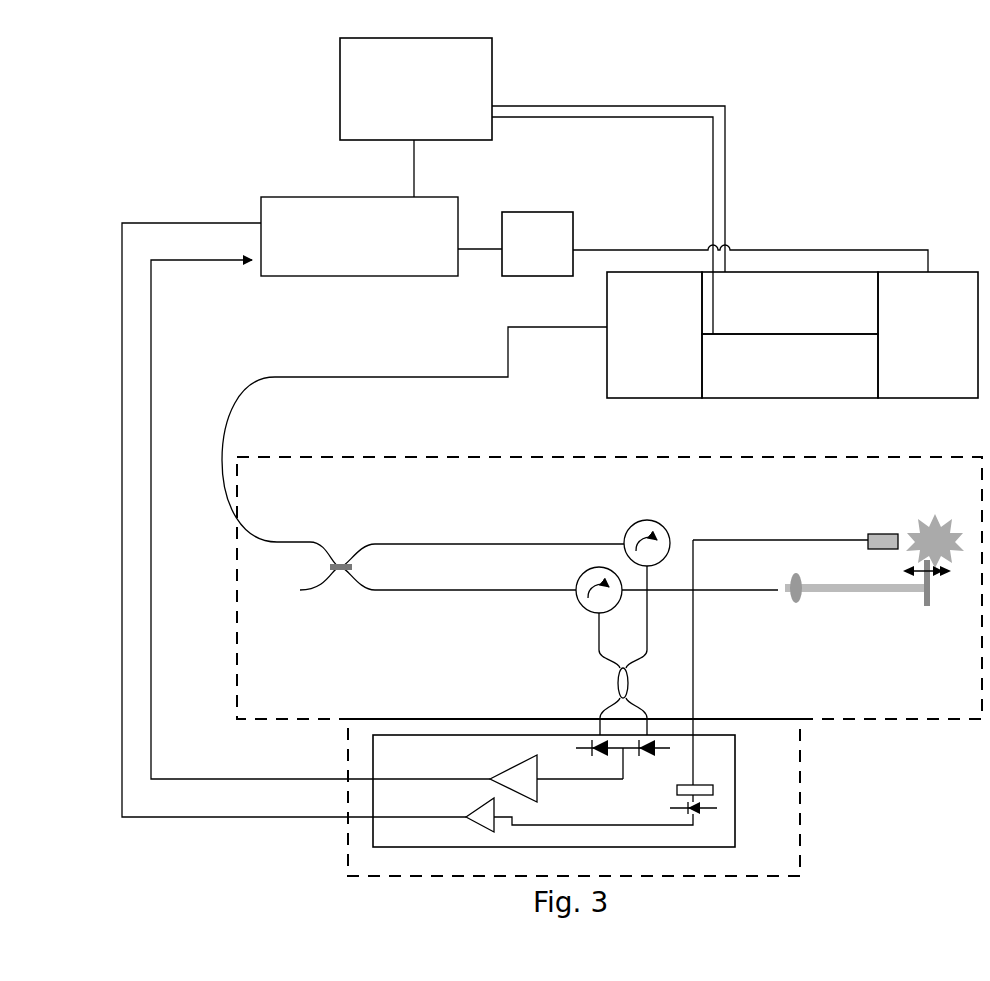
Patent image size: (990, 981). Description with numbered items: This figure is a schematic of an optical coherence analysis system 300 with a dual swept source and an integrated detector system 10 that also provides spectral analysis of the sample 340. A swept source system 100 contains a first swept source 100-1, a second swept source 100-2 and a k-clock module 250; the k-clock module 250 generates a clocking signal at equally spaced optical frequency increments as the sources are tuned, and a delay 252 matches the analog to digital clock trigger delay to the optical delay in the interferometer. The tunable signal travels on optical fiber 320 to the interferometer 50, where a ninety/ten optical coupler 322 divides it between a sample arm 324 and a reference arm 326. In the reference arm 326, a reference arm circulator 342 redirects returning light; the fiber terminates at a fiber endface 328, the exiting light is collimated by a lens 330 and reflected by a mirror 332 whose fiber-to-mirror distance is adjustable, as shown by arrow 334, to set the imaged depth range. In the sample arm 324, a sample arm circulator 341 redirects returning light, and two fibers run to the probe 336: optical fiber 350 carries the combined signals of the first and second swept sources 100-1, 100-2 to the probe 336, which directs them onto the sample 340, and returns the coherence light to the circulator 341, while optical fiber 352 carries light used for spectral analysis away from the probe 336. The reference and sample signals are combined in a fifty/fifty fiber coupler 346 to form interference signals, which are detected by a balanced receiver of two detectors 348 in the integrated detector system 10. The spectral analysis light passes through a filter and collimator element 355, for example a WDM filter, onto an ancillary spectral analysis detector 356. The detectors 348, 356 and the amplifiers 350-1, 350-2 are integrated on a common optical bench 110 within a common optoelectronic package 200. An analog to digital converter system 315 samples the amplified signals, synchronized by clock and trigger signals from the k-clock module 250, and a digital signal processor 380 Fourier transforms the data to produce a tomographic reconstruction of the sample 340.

The optical coherence analysis system 300 is at (556, 72).
The digital signal processor 380 is at (416, 89).
The analog to digital converter system 315 is at (390, 197).
The delay 252 is at (548, 212).
The swept source system 100 is at (792, 353).
The first swept source 100-1 is at (790, 303).
The second swept source 100-2 is at (790, 366).
The k-clock module 250 is at (928, 335).
The optoelectronic package 200 is at (574, 805).
The optical fiber 320 is at (460, 377).
The interferometer 50 is at (609, 621).
The optical coupler 322 is at (344, 560).
The sample arm 324 is at (372, 542).
The reference arm 326 is at (465, 590).
The sample arm circulator 341 is at (643, 521).
The reference arm circulator 342 is at (578, 603).
The fiber coupler 346 is at (617, 683).
The optical fiber 352 is at (770, 540).
The optical fiber 350 is at (752, 541).
The probe 336 is at (868, 537).
The sample 340 is at (920, 530).
The fiber endface 328 is at (773, 589).
The lens 330 is at (790, 600).
The mirror 332 is at (927, 608).
The arrow 334 is at (903, 569).
The integrated detector system 10 is at (816, 762).
The detectors 348 is at (654, 757).
The amplifier 350-1 is at (513, 767).
The amplifier 350-2 is at (479, 806).
The filter and collimator element 355 is at (713, 790).
The spectral analysis detector 356 is at (701, 813).
The optical bench 110 is at (373, 832).